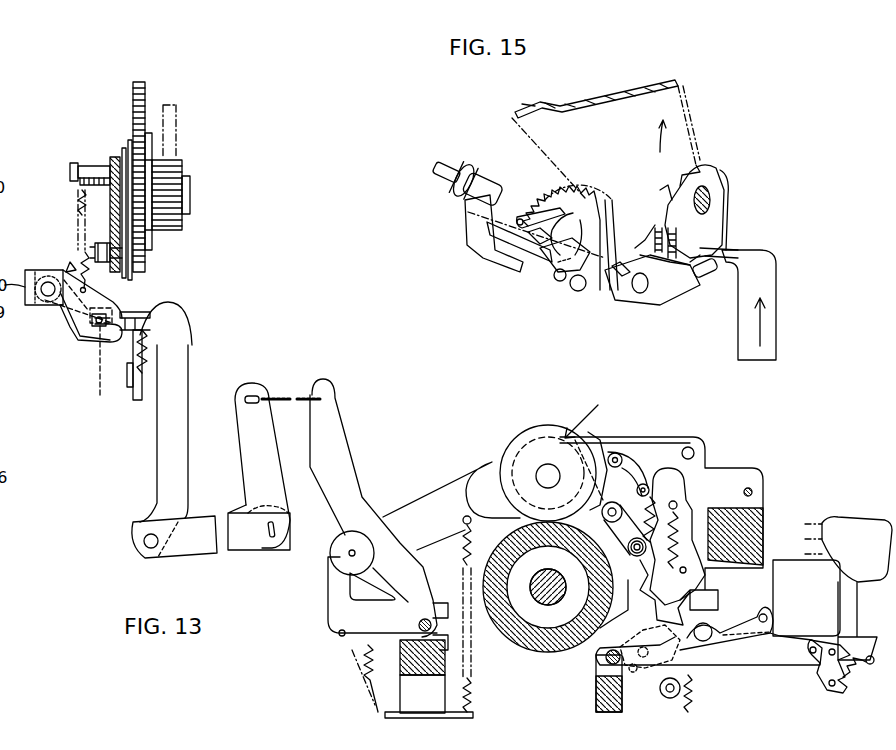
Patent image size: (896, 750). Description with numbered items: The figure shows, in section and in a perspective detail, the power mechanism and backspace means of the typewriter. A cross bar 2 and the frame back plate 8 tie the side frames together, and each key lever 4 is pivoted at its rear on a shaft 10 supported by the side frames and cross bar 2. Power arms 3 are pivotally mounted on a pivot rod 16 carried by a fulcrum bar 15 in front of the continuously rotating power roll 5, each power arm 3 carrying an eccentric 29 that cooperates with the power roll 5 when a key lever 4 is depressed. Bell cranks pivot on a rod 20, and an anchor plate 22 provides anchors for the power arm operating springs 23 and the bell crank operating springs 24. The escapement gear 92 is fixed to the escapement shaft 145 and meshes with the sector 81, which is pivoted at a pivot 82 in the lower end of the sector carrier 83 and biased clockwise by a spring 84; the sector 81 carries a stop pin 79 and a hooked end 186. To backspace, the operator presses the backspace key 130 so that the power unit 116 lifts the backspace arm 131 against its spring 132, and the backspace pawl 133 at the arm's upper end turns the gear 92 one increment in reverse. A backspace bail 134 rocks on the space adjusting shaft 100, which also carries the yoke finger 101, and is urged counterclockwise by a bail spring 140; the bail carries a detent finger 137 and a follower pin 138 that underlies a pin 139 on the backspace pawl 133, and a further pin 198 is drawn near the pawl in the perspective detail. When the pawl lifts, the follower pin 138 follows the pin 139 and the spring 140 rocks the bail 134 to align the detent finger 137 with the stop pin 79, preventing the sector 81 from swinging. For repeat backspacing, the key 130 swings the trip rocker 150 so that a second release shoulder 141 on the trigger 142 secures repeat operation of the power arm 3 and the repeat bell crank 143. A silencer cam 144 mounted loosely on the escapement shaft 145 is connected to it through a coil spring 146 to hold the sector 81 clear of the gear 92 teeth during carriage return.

In FIG. 13, the cross bar 2 is at (595, 695).
In FIG. 13, the power arm 3 is at (426, 492).
In FIG. 13, the key lever 4 is at (795, 655).
In FIG. 13, the power roll 5 is at (545, 650).
In FIG. 13, the frame back plate 8 is at (113, 158).
In FIG. 13, the shaft 10 is at (606, 657).
In FIG. 13, the fulcrum bar 15 is at (746, 562).
In FIG. 13, the pivot rod 16 is at (748, 492).
In FIG. 13, the rod 20 is at (434, 618).
In FIG. 13, the anchor plate 22 is at (380, 712).
In FIG. 13, the power arm operating spring 23 is at (479, 618).
In FIG. 13, the bell crank operating spring 24 is at (352, 652).
In FIG. 13, the eccentric 29 is at (540, 440).
In FIG. 13, the stop pin 79 is at (124, 365).
In FIG. 15, the stop pin 79 is at (518, 217).
In FIG. 15, the sector 81 is at (585, 208).
In FIG. 15, the pivot 82 is at (638, 258).
In FIG. 15, the sector carrier 83 is at (552, 245).
In FIG. 15, the spring 84 is at (562, 283).
In FIG. 13, the gear 92 is at (145, 85).
In FIG. 15, the gear 92 is at (672, 100).
In FIG. 13, the space adjusting shaft 100 is at (44, 287).
In FIG. 15, the space adjusting shaft 100 is at (440, 184).
In FIG. 13, the yoke finger 101 is at (70, 270).
In FIG. 13, the power unit 116 is at (585, 407).
In FIG. 13, the backspace key 130 is at (858, 518).
In FIG. 13, the backspace arm 131 is at (183, 360).
In FIG. 15, the backspace arm 131 is at (776, 342).
In FIG. 13, the spring 132 is at (149, 342).
In FIG. 15, the spring 132 is at (656, 226).
In FIG. 13, the backspace pawl 133 is at (140, 272).
In FIG. 15, the backspace pawl 133 is at (722, 206).
In FIG. 15, the backspace bail 134 is at (480, 240).
In FIG. 13, the detent finger 137 is at (78, 340).
In FIG. 15, the detent finger 137 is at (515, 248).
In FIG. 13, the follower pin 138 is at (112, 360).
In FIG. 13, the pin 139 is at (102, 268).
In FIG. 15, the pin 139 is at (715, 247).
In FIG. 13, the bail spring 140 is at (80, 210).
In FIG. 15, the bail spring 140 is at (650, 238).
In FIG. 13, the second release shoulder 141 is at (650, 617).
In FIG. 13, the trigger 142 is at (638, 626).
In FIG. 13, the repeat bell crank 143 is at (337, 430).
In FIG. 13, the silencer cam 144 is at (130, 142).
In FIG. 13, the escapement shaft 145 is at (100, 170).
In FIG. 13, the coil spring 146 is at (124, 150).
In FIG. 13, the trip rocker 150 is at (730, 630).
In FIG. 15, the hooked end 186 is at (537, 235).
In FIG. 15, the pin 198 is at (705, 280).